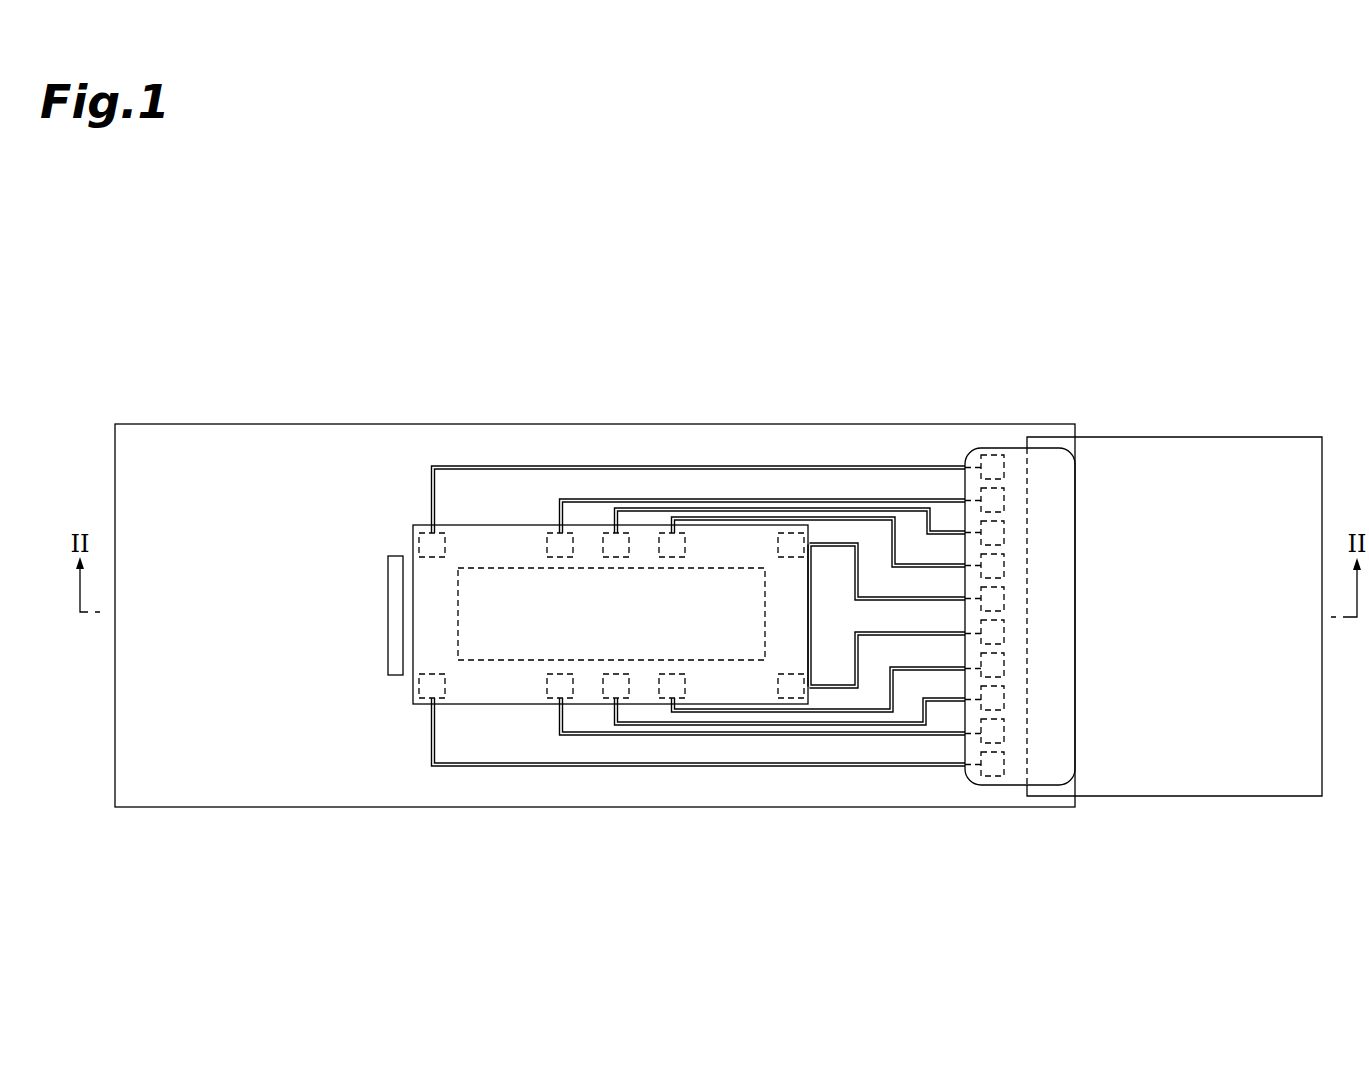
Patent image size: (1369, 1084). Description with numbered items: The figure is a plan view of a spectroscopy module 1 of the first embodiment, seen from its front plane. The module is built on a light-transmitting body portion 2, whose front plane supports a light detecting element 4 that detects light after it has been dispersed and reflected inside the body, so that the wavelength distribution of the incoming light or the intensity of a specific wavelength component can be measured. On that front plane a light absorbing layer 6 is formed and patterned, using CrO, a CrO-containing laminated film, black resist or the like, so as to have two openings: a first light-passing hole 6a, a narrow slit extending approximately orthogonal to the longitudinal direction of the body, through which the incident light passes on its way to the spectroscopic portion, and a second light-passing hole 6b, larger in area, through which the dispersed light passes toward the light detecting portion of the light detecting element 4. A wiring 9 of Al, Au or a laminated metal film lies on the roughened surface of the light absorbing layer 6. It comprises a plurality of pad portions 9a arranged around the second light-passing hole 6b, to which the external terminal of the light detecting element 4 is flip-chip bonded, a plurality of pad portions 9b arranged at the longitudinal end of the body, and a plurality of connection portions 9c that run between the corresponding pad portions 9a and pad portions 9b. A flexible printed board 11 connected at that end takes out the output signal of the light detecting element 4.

The spectroscopy module 1 is at (201, 249).
The body portion 2 is at (197, 403).
The light detecting element 4 is at (422, 525).
The light absorbing layer 6 is at (303, 462).
The first light-passing hole 6a is at (383, 610).
The second light-passing hole 6b is at (460, 637).
The wiring 9 is at (826, 447).
The pad portions 9a is at (777, 542).
The pad portions 9b is at (1005, 470).
The connection portions 9c is at (822, 542).
The flexible printed board 11 is at (1195, 455).